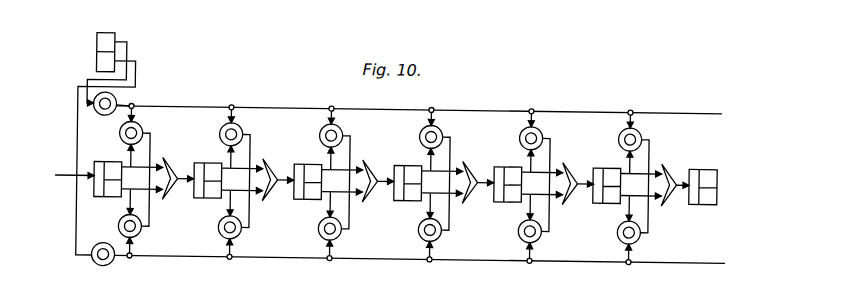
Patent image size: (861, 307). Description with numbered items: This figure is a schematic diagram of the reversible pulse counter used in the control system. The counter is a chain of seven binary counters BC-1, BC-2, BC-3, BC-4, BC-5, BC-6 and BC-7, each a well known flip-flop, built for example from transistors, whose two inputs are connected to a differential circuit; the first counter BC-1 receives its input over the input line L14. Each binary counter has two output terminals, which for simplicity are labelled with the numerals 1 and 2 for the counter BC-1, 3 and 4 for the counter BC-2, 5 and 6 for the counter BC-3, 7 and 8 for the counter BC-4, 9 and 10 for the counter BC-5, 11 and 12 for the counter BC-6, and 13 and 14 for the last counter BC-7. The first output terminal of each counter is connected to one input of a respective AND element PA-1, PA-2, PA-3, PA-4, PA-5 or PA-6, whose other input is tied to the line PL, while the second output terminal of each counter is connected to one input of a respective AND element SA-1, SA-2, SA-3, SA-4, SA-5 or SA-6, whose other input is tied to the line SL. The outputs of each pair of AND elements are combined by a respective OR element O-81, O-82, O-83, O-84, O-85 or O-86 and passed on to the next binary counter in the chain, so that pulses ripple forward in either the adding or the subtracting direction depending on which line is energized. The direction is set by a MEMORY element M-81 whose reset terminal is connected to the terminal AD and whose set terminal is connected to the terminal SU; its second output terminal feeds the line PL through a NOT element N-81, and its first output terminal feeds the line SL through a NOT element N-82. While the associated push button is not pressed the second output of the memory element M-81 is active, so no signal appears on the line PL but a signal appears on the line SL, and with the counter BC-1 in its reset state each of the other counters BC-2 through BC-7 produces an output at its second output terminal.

The terminal AD is at (96, 42).
The terminal SU is at (96, 61).
The MEMORY element M-81 is at (123, 41).
The NOT element N-81 is at (114, 97).
The NOT element N-82 is at (110, 263).
The line PL is at (236, 104).
The line SL is at (375, 258).
The input line L14 is at (57, 175).
The AND element PA-1 is at (140, 125).
The AND element PA-2 is at (259, 167).
The AND element PA-3 is at (359, 168).
The AND element PA-4 is at (459, 169).
The AND element PA-5 is at (559, 171).
The AND element PA-6 is at (658, 172).
The OR element O-81 is at (168, 159).
The OR element O-82 is at (287, 172).
The OR element O-83 is at (387, 173).
The OR element O-84 is at (487, 174).
The OR element O-85 is at (587, 176).
The OR element O-86 is at (686, 177).
The binary counter BC-1 is at (97, 199).
The binary counter BC-2 is at (198, 197).
The binary counter BC-3 is at (298, 198).
The binary counter BC-4 is at (398, 199).
The binary counter BC-5 is at (498, 201).
The binary counter BC-6 is at (597, 202).
The binary counter BC-7 is at (693, 203).
The AND element SA-1 is at (140, 235).
The AND element SA-2 is at (249, 238).
The AND element SA-3 is at (349, 239).
The AND element SA-4 is at (449, 240).
The AND element SA-5 is at (549, 242).
The AND element SA-6 is at (648, 243).
The output terminal 1 is at (142, 161).
The output terminal 2 is at (141, 199).
The output terminal 3 is at (242, 162).
The output terminal 4 is at (241, 200).
The output terminal 5 is at (342, 164).
The output terminal 6 is at (341, 202).
The output terminal 7 is at (442, 165).
The output terminal 8 is at (441, 203).
The output terminal 9 is at (542, 166).
The output terminal 10 is at (541, 204).
The output terminal 11 is at (641, 168).
The output terminal 12 is at (640, 205).
The output terminal 13 is at (733, 172).
The output terminal 14 is at (733, 205).